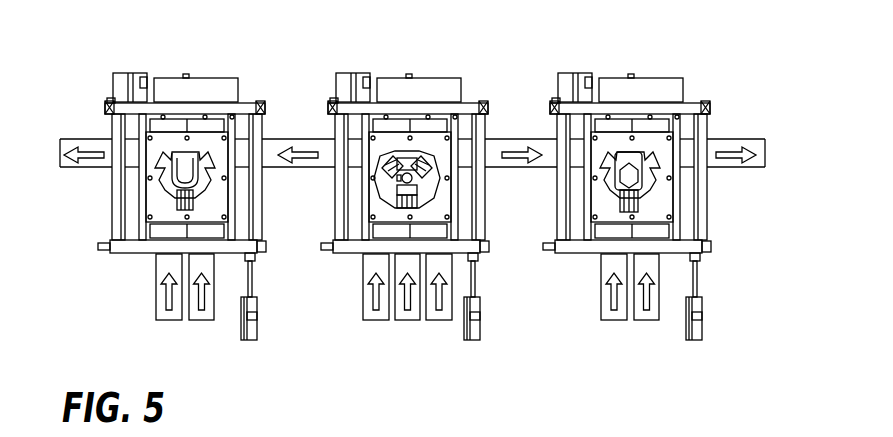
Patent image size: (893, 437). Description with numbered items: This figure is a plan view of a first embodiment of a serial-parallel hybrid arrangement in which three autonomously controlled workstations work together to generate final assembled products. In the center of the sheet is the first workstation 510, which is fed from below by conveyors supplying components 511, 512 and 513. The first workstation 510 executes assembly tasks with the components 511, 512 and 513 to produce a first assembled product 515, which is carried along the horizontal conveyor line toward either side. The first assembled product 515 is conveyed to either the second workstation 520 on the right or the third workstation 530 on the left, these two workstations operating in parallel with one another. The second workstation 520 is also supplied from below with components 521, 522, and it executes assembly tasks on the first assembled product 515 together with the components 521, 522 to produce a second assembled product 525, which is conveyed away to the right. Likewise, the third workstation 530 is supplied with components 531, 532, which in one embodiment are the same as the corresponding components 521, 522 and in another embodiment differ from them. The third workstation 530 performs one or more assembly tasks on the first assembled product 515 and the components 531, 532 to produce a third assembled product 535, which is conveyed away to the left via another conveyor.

The third workstation 530 is at (246, 62).
The first workstation 510 is at (469, 62).
The second workstation 520 is at (692, 62).
The third assembled product 535 is at (62, 193).
The first assembled product 515 is at (280, 193).
The second assembled product 525 is at (720, 193).
The component 531 is at (168, 320).
The component 532 is at (204, 320).
The component 511 is at (375, 320).
The component 512 is at (407, 320).
The component 513 is at (438, 320).
The component 521 is at (613, 320).
The component 522 is at (649, 320).